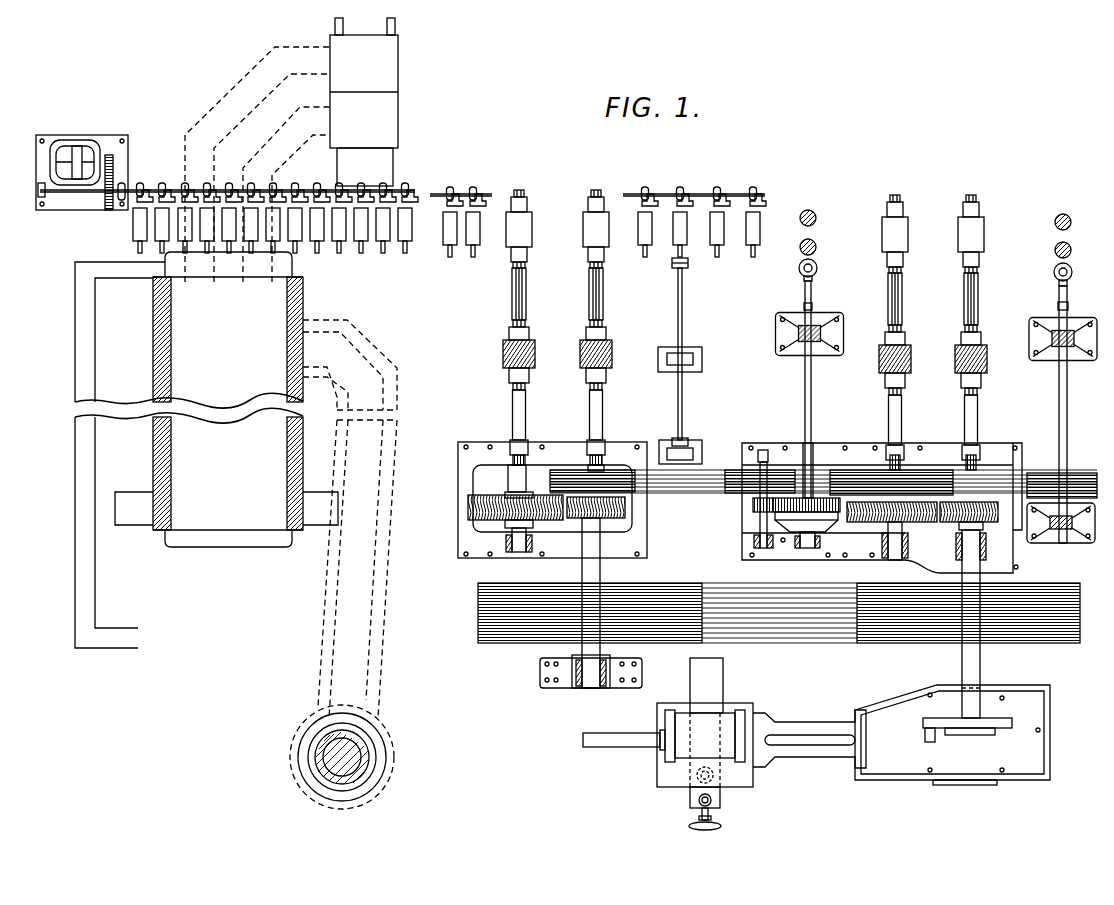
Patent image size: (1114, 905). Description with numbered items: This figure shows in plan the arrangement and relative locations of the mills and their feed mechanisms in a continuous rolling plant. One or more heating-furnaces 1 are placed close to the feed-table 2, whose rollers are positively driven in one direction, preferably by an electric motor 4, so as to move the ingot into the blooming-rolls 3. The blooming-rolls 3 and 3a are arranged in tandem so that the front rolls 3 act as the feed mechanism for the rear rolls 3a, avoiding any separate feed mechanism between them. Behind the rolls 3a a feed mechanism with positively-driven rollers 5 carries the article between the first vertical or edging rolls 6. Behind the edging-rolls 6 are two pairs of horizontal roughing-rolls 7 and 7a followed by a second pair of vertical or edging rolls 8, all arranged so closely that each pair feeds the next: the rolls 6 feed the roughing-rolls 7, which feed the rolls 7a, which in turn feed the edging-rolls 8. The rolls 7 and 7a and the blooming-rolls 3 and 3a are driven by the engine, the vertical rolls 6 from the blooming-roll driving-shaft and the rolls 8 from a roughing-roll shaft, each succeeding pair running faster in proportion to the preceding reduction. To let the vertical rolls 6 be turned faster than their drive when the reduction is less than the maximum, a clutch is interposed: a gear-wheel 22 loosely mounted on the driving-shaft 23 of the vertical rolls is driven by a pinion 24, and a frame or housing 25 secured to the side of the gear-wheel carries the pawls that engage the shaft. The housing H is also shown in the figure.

The heating-furnace 1 is at (206, 450).
The feed-table 2 is at (386, 238).
The blooming-rolls 3 is at (531, 231).
The blooming-rolls 3a is at (591, 439).
The electric motor 4 is at (90, 150).
The positively-driven rollers 5 is at (723, 248).
The vertical or edging rolls 6 is at (823, 244).
The horizontal roughing-rolls 7 is at (906, 236).
The horizontal roughing-rolls 7a is at (984, 236).
The vertical or edging rolls 8 is at (1071, 224).
The gear-wheel 22 is at (815, 498).
The driving-shaft 23 is at (812, 400).
The pinion 24 is at (746, 499).
The frame or housing 25 is at (805, 517).
The housing H is at (884, 706).